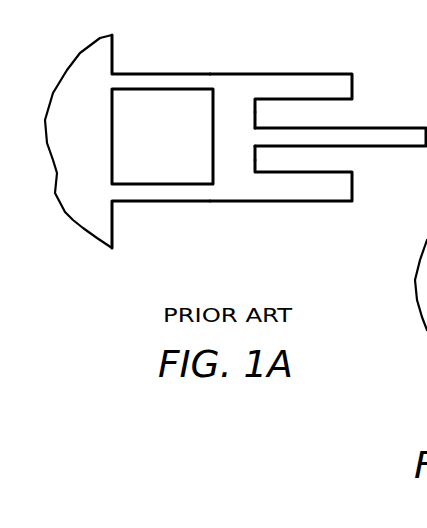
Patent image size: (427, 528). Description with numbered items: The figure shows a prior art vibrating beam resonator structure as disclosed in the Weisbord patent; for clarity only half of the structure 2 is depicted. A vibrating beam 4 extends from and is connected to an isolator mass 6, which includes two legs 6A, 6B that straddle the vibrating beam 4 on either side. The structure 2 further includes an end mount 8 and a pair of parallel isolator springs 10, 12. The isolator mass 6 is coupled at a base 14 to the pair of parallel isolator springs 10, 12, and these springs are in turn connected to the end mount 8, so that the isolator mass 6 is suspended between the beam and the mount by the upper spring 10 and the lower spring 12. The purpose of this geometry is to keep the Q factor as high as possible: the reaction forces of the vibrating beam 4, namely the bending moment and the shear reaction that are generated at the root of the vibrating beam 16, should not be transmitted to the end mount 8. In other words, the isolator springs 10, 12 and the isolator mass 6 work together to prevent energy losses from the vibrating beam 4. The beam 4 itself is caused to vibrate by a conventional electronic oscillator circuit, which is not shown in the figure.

The vibrating beam structure 2 is at (135, 247).
The vibrating beam 4 is at (363, 146).
The isolator mass 6 is at (225, 99).
The leg of isolator mass 6A is at (300, 87).
The leg of isolator mass 6B is at (313, 188).
The end mount 8 is at (55, 197).
The isolator spring 10 is at (143, 74).
The isolator spring 12 is at (165, 201).
The base 14 is at (213, 120).
The root of the vibrating beam 16 is at (265, 135).